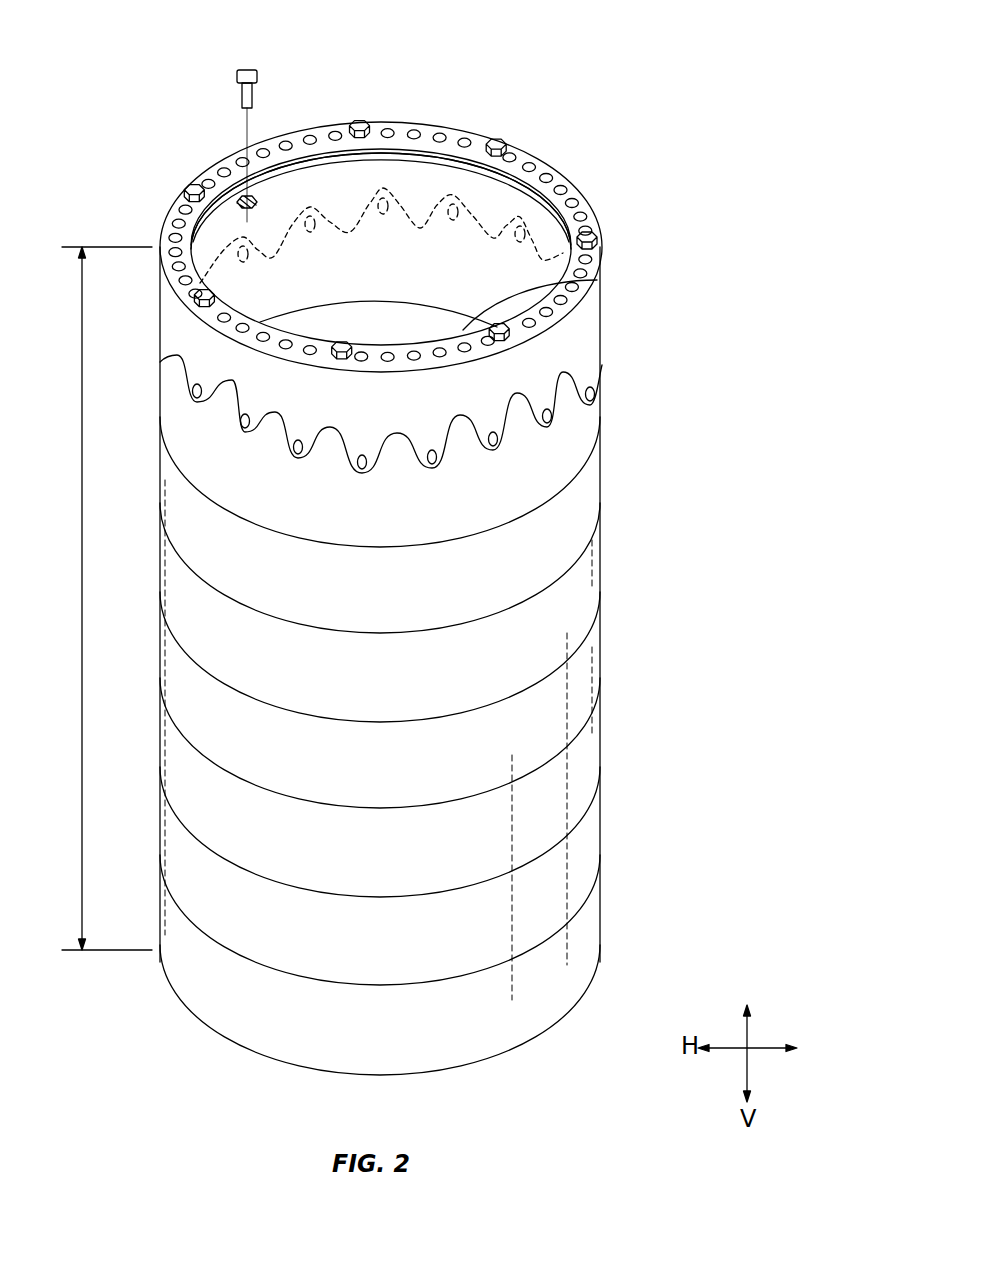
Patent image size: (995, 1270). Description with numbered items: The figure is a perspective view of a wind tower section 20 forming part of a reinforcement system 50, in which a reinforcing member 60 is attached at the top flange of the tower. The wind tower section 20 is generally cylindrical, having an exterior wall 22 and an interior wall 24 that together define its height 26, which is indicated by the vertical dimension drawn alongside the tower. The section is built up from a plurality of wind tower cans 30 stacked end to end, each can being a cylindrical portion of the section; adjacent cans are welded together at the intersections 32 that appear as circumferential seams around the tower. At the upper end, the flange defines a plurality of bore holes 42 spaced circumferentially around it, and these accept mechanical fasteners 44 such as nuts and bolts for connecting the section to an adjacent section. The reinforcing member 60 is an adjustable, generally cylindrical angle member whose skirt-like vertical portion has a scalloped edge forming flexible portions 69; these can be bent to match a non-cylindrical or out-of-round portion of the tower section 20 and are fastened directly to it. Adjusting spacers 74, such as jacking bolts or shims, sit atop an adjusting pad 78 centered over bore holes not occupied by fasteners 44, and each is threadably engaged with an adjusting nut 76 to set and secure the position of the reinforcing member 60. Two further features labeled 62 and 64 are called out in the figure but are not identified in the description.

The wind tower section 20 is at (642, 257).
The exterior wall 22 is at (573, 527).
The interior wall 24 is at (597, 280).
The height 26 is at (82, 543).
The wind tower cans 30 is at (592, 528).
The intersections 32 is at (577, 570).
The bore holes 42 is at (453, 138).
The mechanical fastener 44 is at (243, 70).
The reinforcement system 50 is at (117, 98).
The reinforcing member 60 is at (515, 157).
The outer surface 62 is at (587, 328).
The inner sealing ring 64 is at (400, 183).
The flexible portions 69 is at (433, 437).
The adjusting spacer 74 is at (381, 221).
The adjusting nut 76 is at (381, 197).
The adjusting pad 78 is at (457, 160).